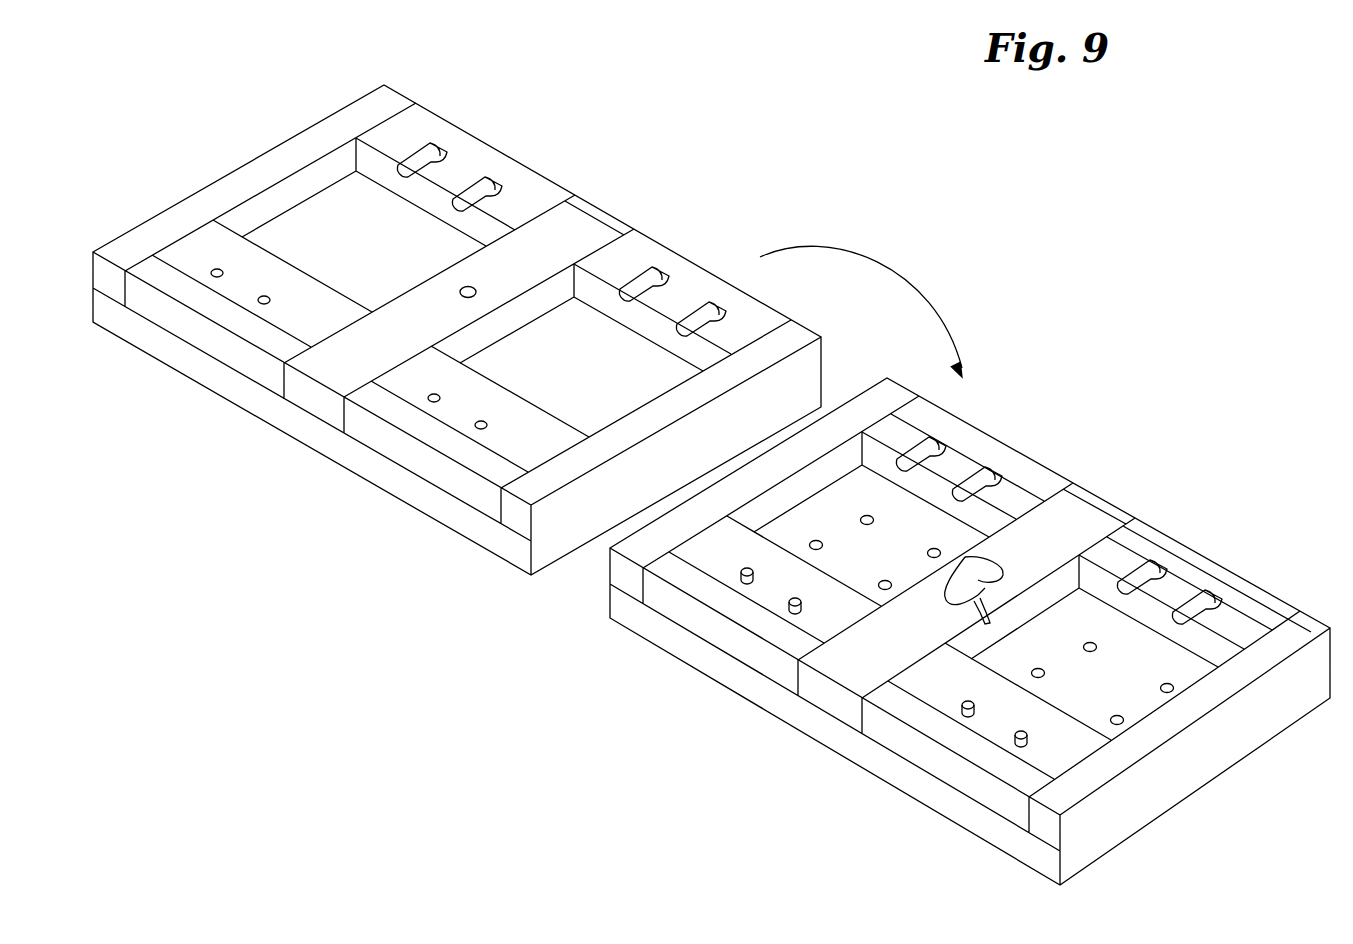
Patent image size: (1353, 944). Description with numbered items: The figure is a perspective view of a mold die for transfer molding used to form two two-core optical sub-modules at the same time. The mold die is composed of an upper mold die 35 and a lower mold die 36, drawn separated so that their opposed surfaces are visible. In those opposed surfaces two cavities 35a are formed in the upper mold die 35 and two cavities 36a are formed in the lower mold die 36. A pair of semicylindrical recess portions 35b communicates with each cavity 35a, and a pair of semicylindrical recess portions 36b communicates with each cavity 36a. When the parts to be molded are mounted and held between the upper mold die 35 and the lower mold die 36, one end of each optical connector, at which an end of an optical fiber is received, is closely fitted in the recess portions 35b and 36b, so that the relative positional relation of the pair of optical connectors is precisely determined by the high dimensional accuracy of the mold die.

The upper mold die 35 is at (622, 200).
The cavity 35a is at (343, 247).
The semicylindrical recess portion 35b is at (473, 187).
The lower mold die 36 is at (1118, 492).
The cavity 36a is at (857, 563).
The semicylindrical recess portion 36b is at (972, 478).